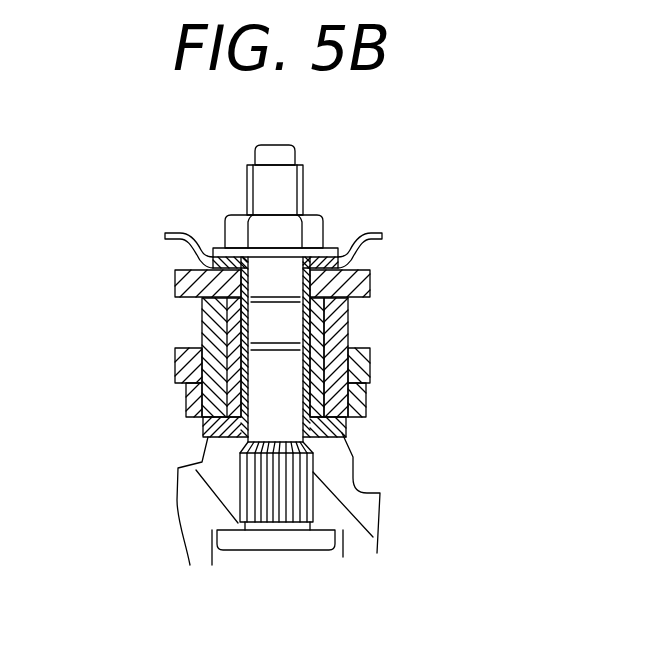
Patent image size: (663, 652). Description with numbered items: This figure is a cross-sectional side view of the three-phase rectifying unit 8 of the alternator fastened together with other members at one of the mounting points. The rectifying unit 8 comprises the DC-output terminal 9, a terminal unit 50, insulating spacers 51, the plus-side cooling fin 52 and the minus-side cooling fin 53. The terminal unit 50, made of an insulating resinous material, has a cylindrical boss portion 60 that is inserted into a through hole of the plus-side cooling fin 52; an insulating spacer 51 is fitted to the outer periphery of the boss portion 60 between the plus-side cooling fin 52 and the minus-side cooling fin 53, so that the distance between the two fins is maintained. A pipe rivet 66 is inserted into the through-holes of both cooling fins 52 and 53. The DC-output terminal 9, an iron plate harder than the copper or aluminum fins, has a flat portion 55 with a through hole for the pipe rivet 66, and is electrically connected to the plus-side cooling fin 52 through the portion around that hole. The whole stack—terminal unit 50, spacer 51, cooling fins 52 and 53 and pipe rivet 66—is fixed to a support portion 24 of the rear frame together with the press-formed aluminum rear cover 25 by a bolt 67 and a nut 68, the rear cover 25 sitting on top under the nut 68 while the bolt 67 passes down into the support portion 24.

The three-phase rectifying unit 8 is at (410, 262).
The DC-output terminal 9 is at (371, 398).
The support portion 24 is at (342, 477).
The rear cover 25 is at (173, 235).
The terminal unit 50 is at (203, 425).
The insulating spacer 51 is at (205, 335).
The plus-side cooling fin 52 is at (178, 362).
The minus-side cooling fin 53 is at (173, 275).
The flat portion 55 is at (200, 407).
The boss portion 60 is at (349, 315).
The pipe rivet 66 is at (349, 340).
The bolt 67 is at (277, 550).
The nut 68 is at (297, 233).